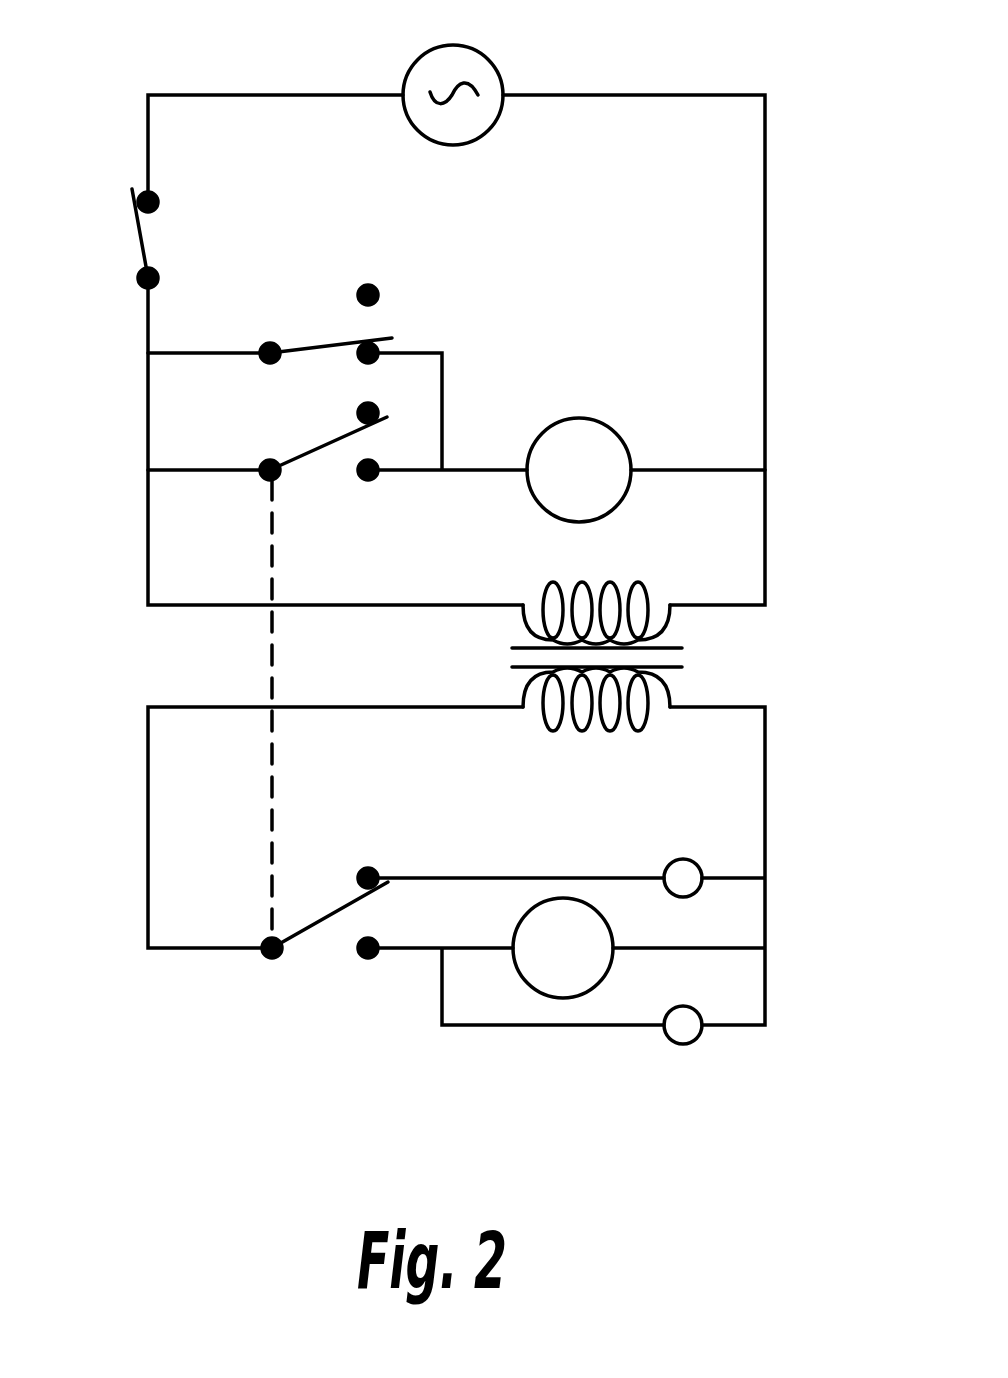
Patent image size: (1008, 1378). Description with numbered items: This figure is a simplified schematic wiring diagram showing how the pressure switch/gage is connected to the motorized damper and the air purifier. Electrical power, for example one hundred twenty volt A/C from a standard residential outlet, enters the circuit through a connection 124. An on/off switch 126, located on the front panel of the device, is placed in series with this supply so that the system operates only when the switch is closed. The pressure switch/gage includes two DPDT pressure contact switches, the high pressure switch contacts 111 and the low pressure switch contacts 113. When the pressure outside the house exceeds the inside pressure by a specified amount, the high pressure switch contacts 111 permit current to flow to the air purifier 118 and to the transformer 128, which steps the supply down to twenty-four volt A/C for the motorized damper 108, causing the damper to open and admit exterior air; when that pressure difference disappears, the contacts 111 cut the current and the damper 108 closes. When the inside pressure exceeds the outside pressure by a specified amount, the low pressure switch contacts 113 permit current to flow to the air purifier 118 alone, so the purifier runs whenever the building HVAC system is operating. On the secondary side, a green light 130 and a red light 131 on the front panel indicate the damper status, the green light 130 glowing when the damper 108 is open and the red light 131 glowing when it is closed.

The connection 124 is at (455, 45).
The on/off switch 126 is at (138, 227).
The low pressure switch contacts 113 is at (328, 342).
The high pressure switch contacts 111 is at (320, 448).
The air purifier 118 is at (578, 420).
The transformer 128 is at (686, 661).
The red light 131 is at (682, 858).
The motorized damper 108 is at (562, 1000).
The green light 130 is at (683, 1043).